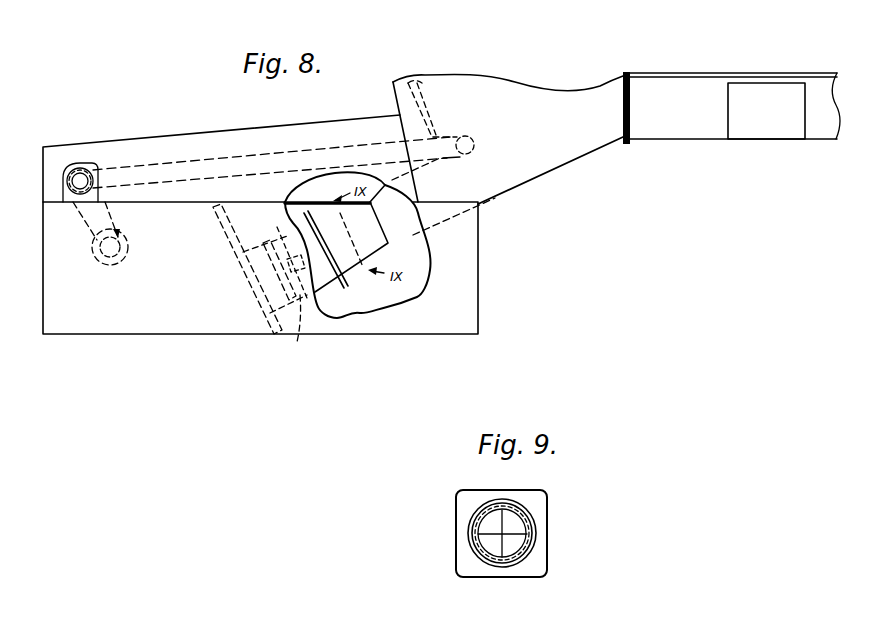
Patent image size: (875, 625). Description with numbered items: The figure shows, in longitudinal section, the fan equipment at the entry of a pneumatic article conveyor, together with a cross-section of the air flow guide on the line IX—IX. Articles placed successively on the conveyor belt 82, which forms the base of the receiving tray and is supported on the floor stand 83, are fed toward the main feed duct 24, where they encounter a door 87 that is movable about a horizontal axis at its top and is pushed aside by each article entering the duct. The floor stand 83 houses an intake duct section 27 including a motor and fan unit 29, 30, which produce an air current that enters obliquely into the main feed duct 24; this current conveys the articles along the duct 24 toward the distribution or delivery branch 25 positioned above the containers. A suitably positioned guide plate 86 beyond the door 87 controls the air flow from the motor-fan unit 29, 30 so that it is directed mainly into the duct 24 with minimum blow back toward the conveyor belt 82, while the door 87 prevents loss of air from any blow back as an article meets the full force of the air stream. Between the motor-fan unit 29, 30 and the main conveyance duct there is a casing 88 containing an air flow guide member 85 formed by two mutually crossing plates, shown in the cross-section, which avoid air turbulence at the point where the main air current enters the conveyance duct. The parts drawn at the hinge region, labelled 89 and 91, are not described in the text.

In FIG. 8, the air duct 24 is at (584, 160).
In FIG. 8, the delivery branch 25 is at (749, 128).
In FIG. 8, the intake duct section 27 is at (292, 330).
In FIG. 8, the motor 29 is at (280, 233).
In FIG. 8, the fan 30 is at (260, 302).
In FIG. 8, the conveyor belt 82 is at (143, 163).
In FIG. 8, the floor stand 83 is at (128, 315).
In FIG. 8, the air flow guide member 85 is at (351, 249).
In FIG. 9, the air flow guide member 85 is at (478, 535).
In FIG. 8, the guide plate 86 is at (470, 159).
In FIG. 8, the door 87 is at (405, 82).
In FIG. 8, the casing 88 is at (512, 85).
In FIG. 8, the lower hinge pin 89 is at (95, 274).
In FIG. 8, the hinge 91 is at (90, 233).